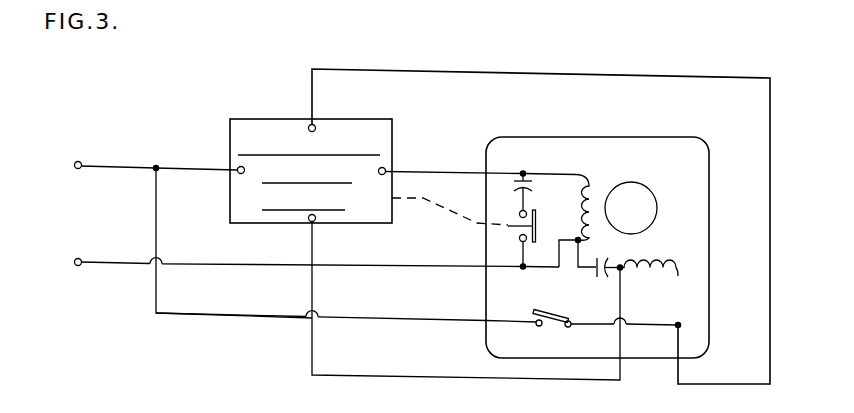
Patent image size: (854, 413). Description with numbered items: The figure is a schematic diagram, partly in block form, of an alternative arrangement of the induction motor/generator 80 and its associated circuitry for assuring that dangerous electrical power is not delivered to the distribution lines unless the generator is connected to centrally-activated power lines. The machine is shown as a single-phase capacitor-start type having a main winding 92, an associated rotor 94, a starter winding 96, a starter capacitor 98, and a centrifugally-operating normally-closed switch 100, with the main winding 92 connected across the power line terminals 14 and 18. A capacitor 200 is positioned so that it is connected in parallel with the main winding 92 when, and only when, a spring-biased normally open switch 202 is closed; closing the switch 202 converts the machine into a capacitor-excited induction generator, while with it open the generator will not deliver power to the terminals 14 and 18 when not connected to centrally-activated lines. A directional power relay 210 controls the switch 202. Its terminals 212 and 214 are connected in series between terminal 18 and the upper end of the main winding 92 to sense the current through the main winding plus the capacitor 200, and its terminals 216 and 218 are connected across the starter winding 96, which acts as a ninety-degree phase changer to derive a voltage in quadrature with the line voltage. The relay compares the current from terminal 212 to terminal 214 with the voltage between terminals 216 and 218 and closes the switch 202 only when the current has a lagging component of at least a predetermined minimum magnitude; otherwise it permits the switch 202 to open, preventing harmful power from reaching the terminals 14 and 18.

The power line terminal 14 is at (73, 262).
The power line terminal 18 is at (77, 162).
The induction motor/generator 80 is at (668, 137).
The main winding 92 is at (589, 190).
The rotor 94 is at (657, 202).
The starter winding 96 is at (655, 263).
The starter capacitor 98 is at (596, 277).
The centrifugally-operating normally-closed switch 100 is at (558, 328).
The capacitor 200 is at (528, 178).
The switch 202 is at (508, 229).
The directional power relay 210 is at (247, 119).
The relay current terminal 212 is at (237, 167).
The relay current terminal 214 is at (390, 166).
The relay voltage terminal 216 is at (315, 126).
The relay voltage terminal 218 is at (309, 221).